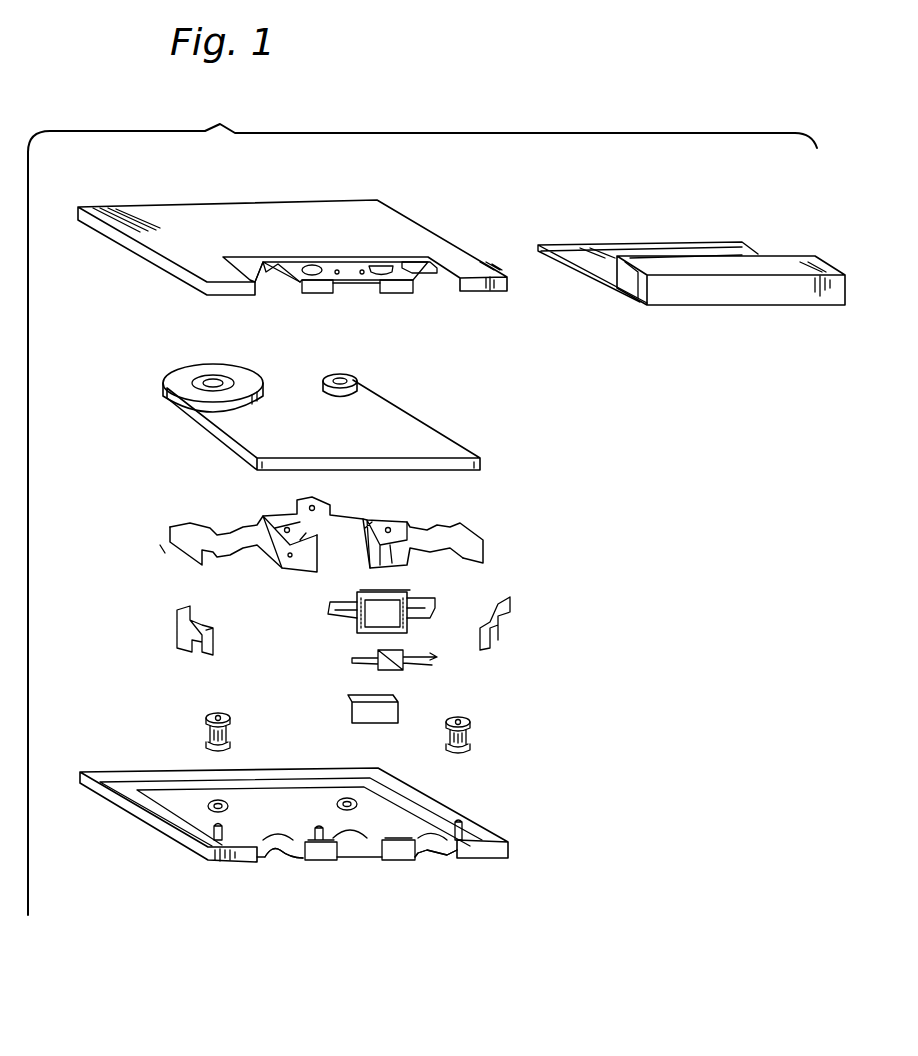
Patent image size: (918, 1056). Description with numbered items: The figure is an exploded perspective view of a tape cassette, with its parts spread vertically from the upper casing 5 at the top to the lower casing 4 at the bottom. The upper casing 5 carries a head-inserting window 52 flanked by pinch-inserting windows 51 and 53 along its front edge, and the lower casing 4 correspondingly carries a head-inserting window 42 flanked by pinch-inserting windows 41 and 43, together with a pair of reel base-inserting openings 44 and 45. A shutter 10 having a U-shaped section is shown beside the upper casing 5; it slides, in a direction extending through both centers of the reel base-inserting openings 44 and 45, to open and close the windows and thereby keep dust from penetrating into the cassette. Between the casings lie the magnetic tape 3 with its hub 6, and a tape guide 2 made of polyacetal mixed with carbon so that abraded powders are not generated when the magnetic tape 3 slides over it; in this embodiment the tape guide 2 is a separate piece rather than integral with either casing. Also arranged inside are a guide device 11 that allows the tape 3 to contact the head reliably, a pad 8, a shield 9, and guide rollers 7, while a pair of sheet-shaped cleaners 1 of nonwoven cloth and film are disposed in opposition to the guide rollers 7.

The sheet-shaped cleaner 1 is at (188, 607).
The tape guide 2 is at (185, 530).
The magnetic tape 3 is at (433, 418).
The lower casing 4 is at (427, 790).
The upper casing 5 is at (430, 228).
The hub 6 is at (210, 378).
The guide roller 7 is at (227, 720).
The pad 8 is at (417, 660).
The shield 9 is at (398, 710).
The shutter 10 is at (817, 255).
The guide device 11 is at (337, 617).
The pinch-inserting window 41 is at (273, 845).
The head-inserting window 42 is at (333, 860).
The pinch-inserting window 43 is at (433, 833).
The reel base-inserting opening 44 is at (210, 807).
The reel base-inserting opening 45 is at (347, 800).
The pinch-inserting window 51 is at (266, 277).
The head-inserting window 52 is at (353, 285).
The pinch-inserting window 53 is at (430, 280).